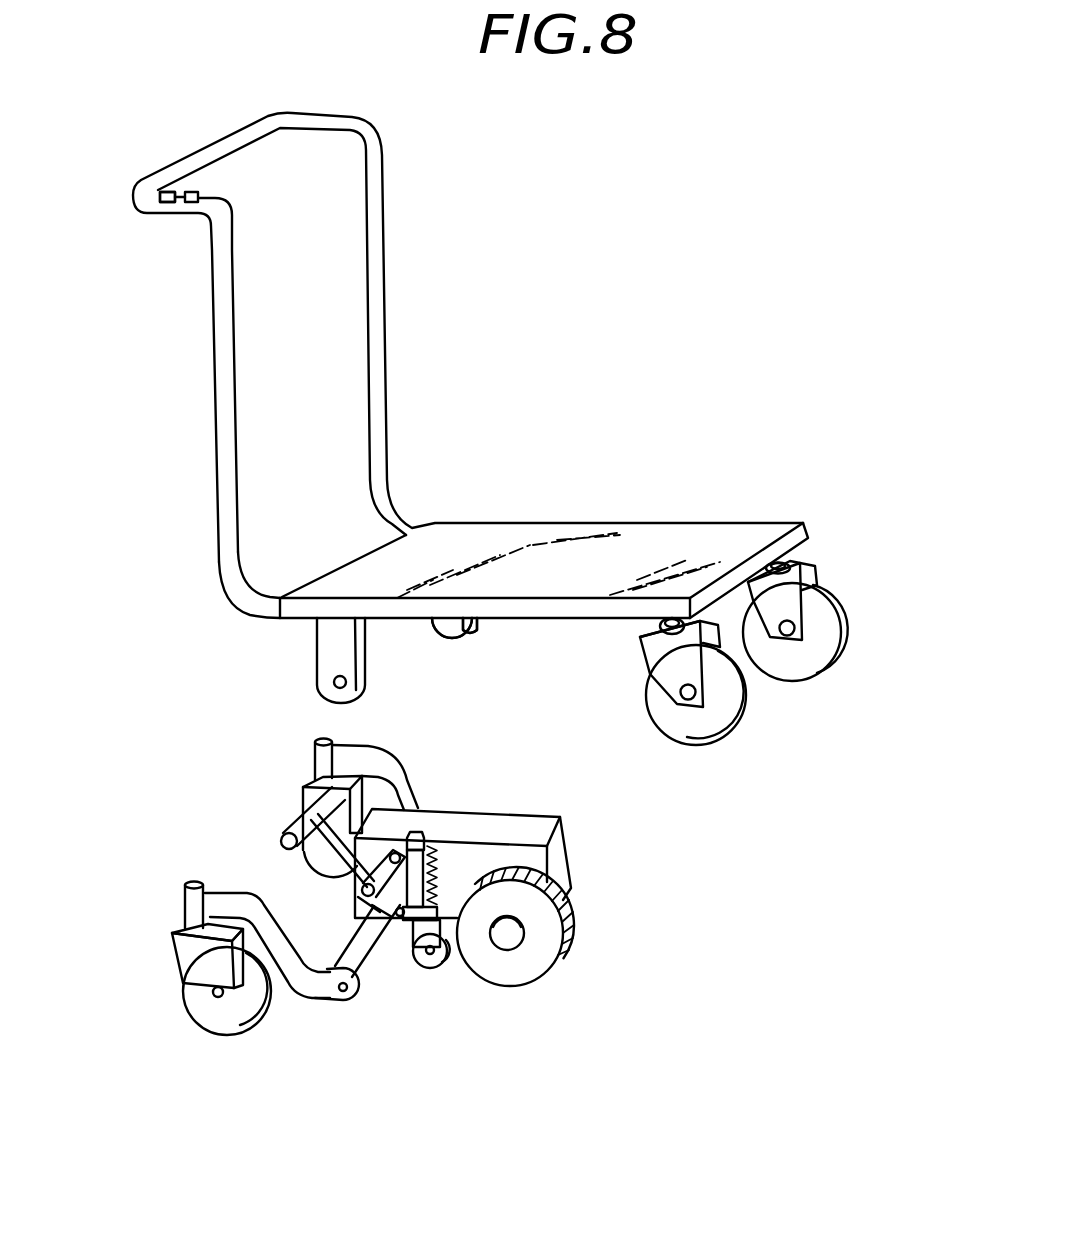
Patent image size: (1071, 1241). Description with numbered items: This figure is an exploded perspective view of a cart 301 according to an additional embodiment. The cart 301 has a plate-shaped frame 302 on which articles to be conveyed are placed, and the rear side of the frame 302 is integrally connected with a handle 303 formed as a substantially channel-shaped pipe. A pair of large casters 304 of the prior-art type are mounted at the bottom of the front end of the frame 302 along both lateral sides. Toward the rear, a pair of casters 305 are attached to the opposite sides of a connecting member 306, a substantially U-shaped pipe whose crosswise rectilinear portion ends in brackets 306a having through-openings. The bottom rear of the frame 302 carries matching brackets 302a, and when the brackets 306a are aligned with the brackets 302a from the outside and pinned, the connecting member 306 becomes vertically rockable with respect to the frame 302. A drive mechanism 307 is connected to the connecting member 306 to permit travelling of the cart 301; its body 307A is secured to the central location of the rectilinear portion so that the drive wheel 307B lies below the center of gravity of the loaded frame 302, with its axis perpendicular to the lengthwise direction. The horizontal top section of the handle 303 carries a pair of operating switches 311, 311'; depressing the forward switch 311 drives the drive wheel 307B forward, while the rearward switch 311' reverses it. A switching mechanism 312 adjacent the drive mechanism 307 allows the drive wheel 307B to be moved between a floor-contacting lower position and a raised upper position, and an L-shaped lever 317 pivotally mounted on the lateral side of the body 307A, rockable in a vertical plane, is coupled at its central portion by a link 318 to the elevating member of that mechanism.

The cart 301 is at (580, 455).
The frame 302 is at (700, 530).
The brackets 302a is at (328, 663).
The handle 303 is at (220, 317).
The large casters 304 is at (832, 638).
The casters 305 is at (307, 863).
The connecting member 306 is at (303, 997).
The brackets 306a is at (353, 993).
The drive mechanism 307 is at (590, 898).
The body 307A is at (523, 817).
The drive wheel 307B is at (547, 960).
The operating switch 311 is at (230, 189).
The operating switch 311' is at (128, 231).
The switching mechanism 312 is at (435, 820).
The L-shaped lever 317 is at (307, 810).
The link 318 is at (383, 912).